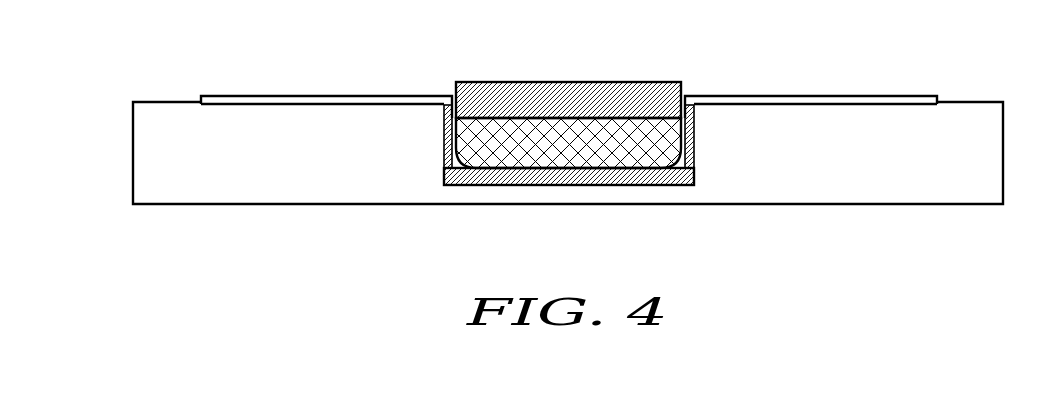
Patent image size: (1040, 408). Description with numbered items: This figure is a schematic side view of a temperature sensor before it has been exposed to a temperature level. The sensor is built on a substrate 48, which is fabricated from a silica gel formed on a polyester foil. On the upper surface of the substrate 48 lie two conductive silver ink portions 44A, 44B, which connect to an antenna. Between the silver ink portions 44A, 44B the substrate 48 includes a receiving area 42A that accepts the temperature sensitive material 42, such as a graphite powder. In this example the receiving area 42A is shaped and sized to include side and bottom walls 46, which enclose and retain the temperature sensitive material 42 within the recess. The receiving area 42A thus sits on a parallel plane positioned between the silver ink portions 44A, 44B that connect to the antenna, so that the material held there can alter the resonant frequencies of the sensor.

The temperature sensitive material 42 is at (567, 81).
The receiving area 42A is at (452, 97).
The conductive silver ink portion 44A is at (328, 95).
The conductive silver ink portion 44B is at (818, 95).
The side and bottom walls 46 is at (530, 173).
The substrate 48 is at (976, 101).